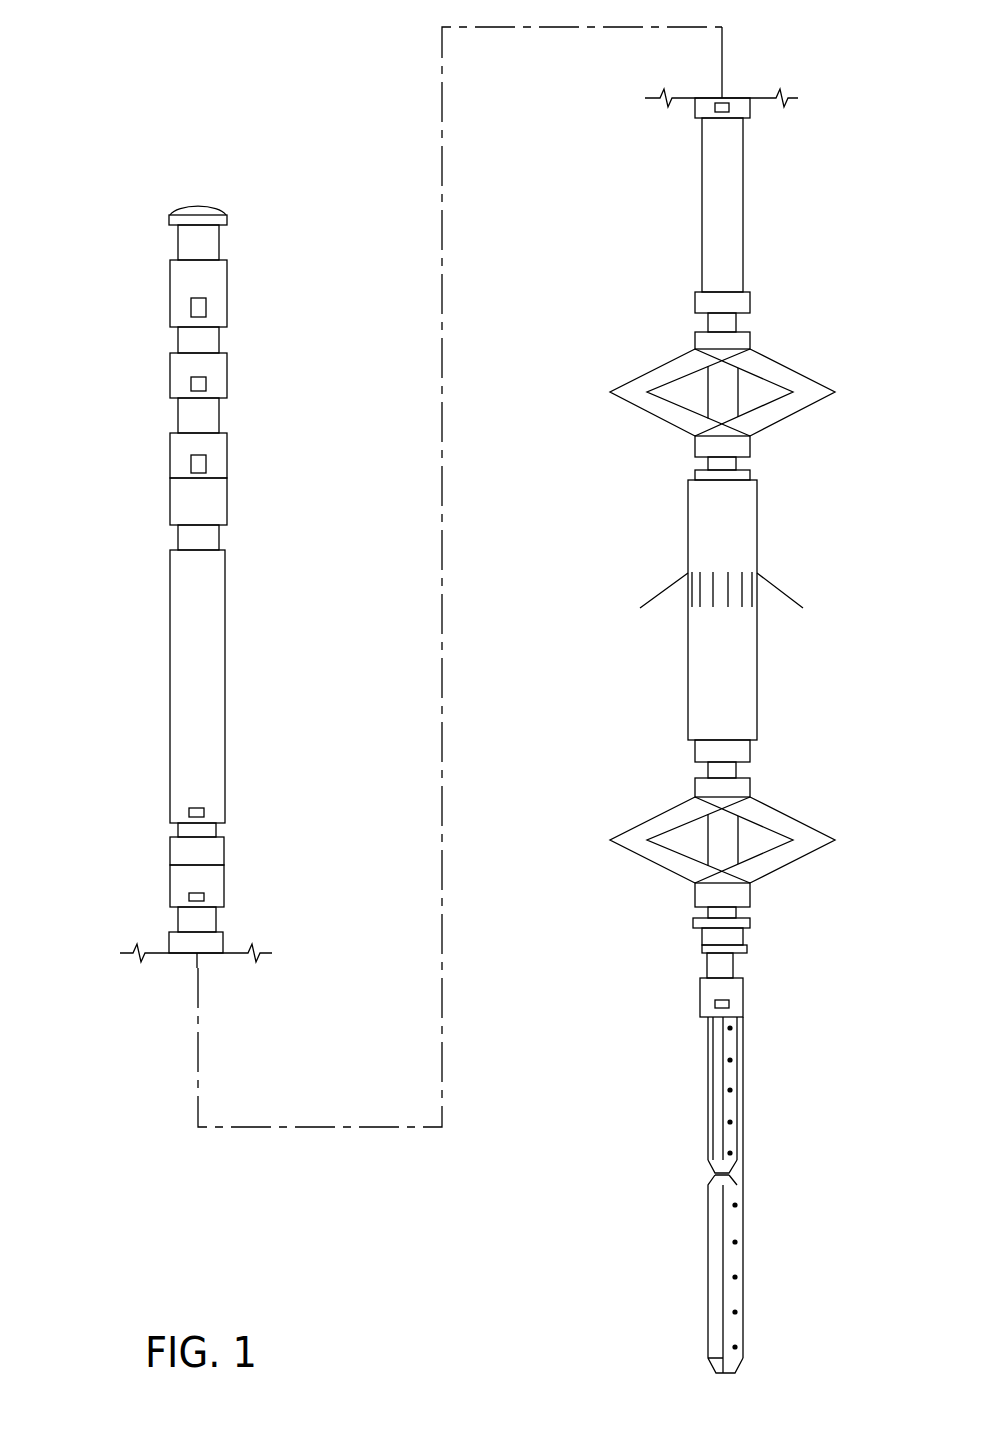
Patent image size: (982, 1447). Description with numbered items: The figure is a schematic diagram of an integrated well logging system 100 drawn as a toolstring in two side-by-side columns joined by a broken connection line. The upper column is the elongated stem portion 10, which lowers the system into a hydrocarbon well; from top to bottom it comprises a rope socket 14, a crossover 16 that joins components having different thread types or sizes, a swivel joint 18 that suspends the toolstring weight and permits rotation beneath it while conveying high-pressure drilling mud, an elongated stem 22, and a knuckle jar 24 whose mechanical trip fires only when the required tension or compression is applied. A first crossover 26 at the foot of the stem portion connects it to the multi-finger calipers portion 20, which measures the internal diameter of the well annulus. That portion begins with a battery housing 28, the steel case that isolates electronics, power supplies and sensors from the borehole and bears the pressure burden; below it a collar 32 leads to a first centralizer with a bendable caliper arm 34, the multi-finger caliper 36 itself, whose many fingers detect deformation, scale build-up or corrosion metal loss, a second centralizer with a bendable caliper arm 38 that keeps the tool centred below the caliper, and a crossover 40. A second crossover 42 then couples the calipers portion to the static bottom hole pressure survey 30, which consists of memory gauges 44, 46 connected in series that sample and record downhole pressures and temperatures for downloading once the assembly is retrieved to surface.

The integrated well logging system 100 is at (142, 42).
The elongated stem portion 10 is at (86, 203).
The rope socket 14 is at (227, 264).
The crossover 16 is at (228, 363).
The swivel joint 18 is at (228, 505).
The elongated stem 22 is at (224, 673).
The knuckle jar 24 is at (224, 850).
The first crossover 26 is at (224, 942).
The multi-finger calipers portion 20 is at (550, 100).
The battery housing 28 is at (743, 206).
The collar 32 is at (750, 300).
The bendable caliper arm 34 is at (805, 377).
The multi-finger caliper 36 is at (757, 590).
The bendable caliper arm 38 is at (798, 823).
The crossover 40 is at (750, 923).
The static bottom hole pressure survey 30 is at (550, 922).
The second crossover 42 is at (745, 990).
The memory gauge 44 is at (737, 1098).
The memory gauge 46 is at (743, 1292).